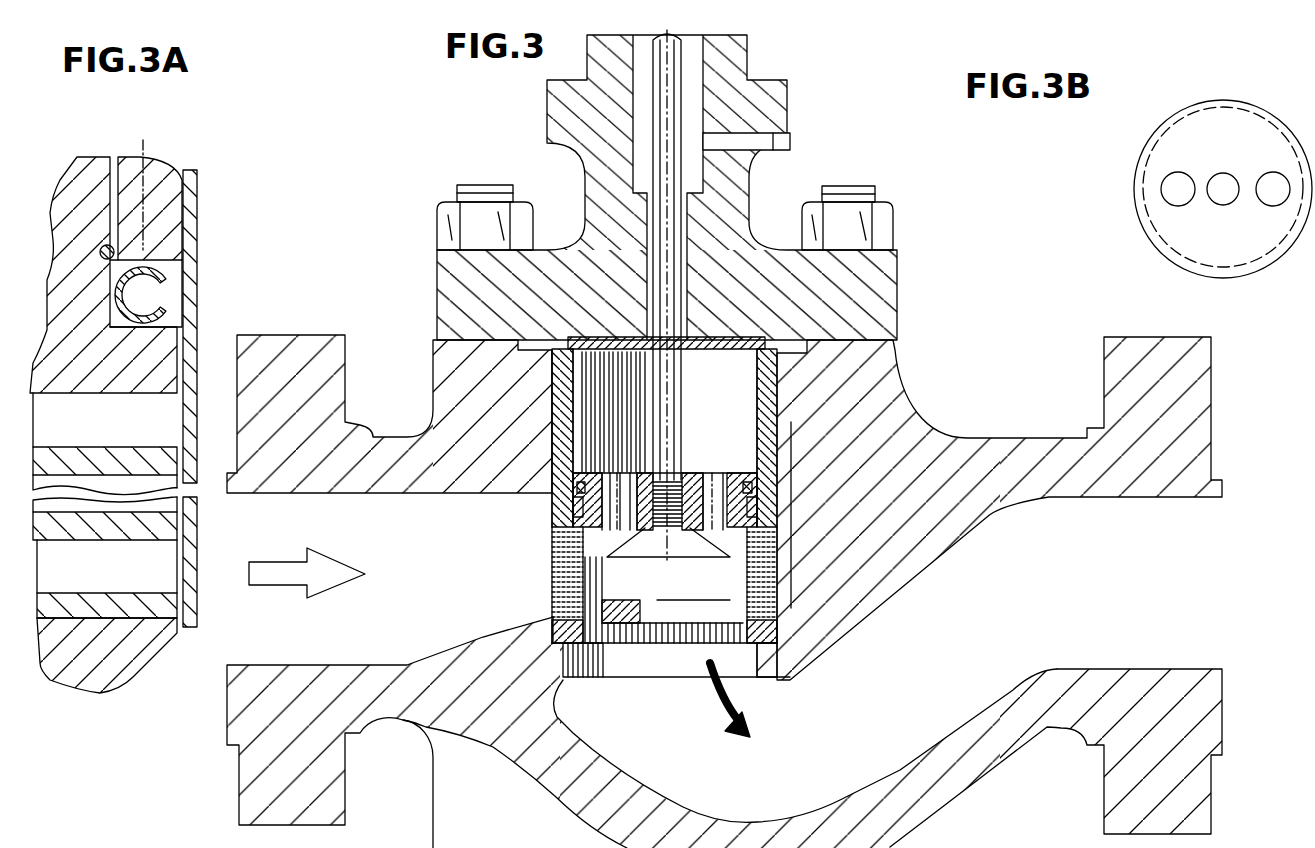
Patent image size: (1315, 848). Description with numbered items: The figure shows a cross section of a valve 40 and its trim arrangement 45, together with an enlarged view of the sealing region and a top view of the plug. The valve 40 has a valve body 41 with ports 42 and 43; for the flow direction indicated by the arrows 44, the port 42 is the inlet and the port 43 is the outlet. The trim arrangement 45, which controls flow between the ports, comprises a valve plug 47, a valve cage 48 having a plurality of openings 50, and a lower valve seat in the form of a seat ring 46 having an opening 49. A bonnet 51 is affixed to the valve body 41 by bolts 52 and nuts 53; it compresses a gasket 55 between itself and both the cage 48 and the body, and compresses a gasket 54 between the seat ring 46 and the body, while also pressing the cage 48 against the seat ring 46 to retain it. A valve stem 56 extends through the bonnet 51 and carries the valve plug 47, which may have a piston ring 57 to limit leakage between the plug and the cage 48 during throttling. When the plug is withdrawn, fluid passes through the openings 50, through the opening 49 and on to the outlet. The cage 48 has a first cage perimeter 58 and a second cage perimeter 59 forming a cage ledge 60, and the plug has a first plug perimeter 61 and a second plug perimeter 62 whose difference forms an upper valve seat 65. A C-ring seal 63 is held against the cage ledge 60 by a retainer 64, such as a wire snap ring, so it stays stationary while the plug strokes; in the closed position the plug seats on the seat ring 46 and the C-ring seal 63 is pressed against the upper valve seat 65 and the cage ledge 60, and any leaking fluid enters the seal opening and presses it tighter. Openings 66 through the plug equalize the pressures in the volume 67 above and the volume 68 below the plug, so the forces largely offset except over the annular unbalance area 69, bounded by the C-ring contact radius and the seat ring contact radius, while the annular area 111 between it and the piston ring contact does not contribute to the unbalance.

In FIG. 3, the valve 40 is at (345, 226).
In FIG. 3, the valve body 41 is at (243, 360).
In FIG. 3, the port 42 is at (240, 650).
In FIG. 3, the port 43 is at (1211, 535).
In FIG. 3, the arrows 44 is at (316, 584).
In FIG. 3, the trim arrangement 45 is at (472, 575).
In FIG. 3, the seat ring 46 is at (757, 643).
In FIG. 3A, the seat ring 46 is at (113, 700).
In FIG. 3A, the valve plug 47 is at (187, 440).
In FIG. 3B, the valve plug 47 is at (1290, 127).
In FIG. 3, the valve cage 48 is at (797, 423).
In FIG. 3A, the valve cage 48 is at (100, 160).
In FIG. 3, the opening 49 is at (673, 633).
In FIG. 3, the openings 50 is at (556, 568).
In FIG. 3, the bonnet 51 is at (887, 305).
In FIG. 3, the bolts 52 is at (482, 183).
In FIG. 3, the nuts 53 is at (441, 210).
In FIG. 3, the gasket 54 is at (563, 680).
In FIG. 3, the gasket 55 is at (570, 338).
In FIG. 3, the valve stem 56 is at (676, 60).
In FIG. 3B, the valve stem 56 is at (1218, 172).
In FIG. 3, the piston ring 57 is at (553, 492).
In FIG. 3, the first cage perimeter 58 is at (577, 420).
In FIG. 3, the second cage perimeter 59 is at (607, 557).
In FIG. 3, the cage ledge 60 is at (560, 531).
In FIG. 3A, the cage ledge 60 is at (92, 312).
In FIG. 3, the first plug perimeter 61 is at (550, 487).
In FIG. 3, the second plug perimeter 62 is at (553, 616).
In FIG. 3, the C-ring seal 63 is at (553, 527).
In FIG. 3A, the C-ring seal 63 is at (167, 278).
In FIG. 3, the retainer 64 is at (553, 503).
In FIG. 3A, the retainer 64 is at (104, 258).
In FIG. 3, the upper valve seat 65 is at (627, 493).
In FIG. 3A, the upper valve seat 65 is at (157, 270).
In FIG. 3, the openings 66 is at (662, 473).
In FIG. 3B, the openings 66 is at (1268, 188).
In FIG. 3, the volume 67 is at (705, 390).
In FIG. 3, the volume 68 is at (670, 765).
In FIG. 3A, the unbalance area 69 is at (97, 223).
In FIG. 3B, the unbalance area 69 is at (1220, 257).
In FIG. 3A, the annular area 111 is at (157, 160).
In FIG. 3B, the annular area 111 is at (1228, 117).